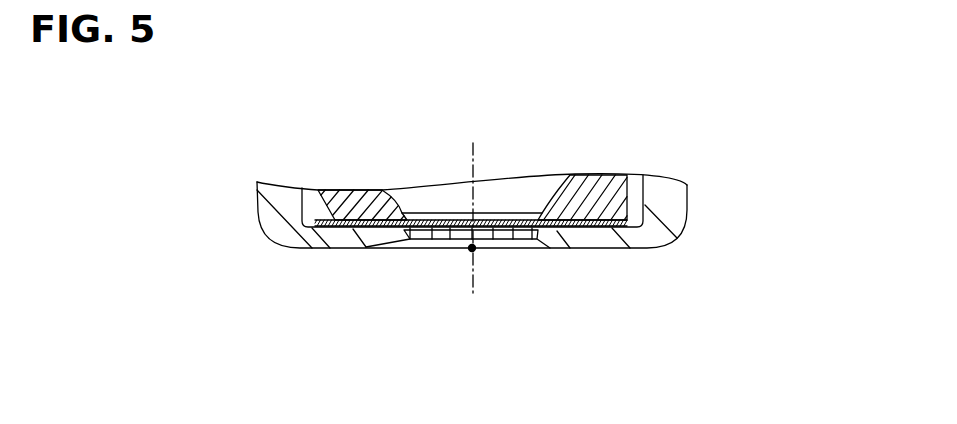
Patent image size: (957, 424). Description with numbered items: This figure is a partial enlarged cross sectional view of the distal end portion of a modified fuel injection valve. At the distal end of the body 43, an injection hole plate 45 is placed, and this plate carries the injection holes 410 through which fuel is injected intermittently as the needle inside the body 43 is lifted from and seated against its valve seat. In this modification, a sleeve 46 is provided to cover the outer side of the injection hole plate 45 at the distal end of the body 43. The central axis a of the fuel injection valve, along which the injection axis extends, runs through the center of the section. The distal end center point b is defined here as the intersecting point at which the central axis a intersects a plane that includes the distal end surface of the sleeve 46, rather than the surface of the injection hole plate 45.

The body 43 is at (603, 201).
The injection hole plate 45 is at (592, 228).
The sleeve 46 is at (650, 231).
The injection holes 410 is at (432, 240).
The central axis a is at (473, 150).
The distal end center point b is at (472, 249).